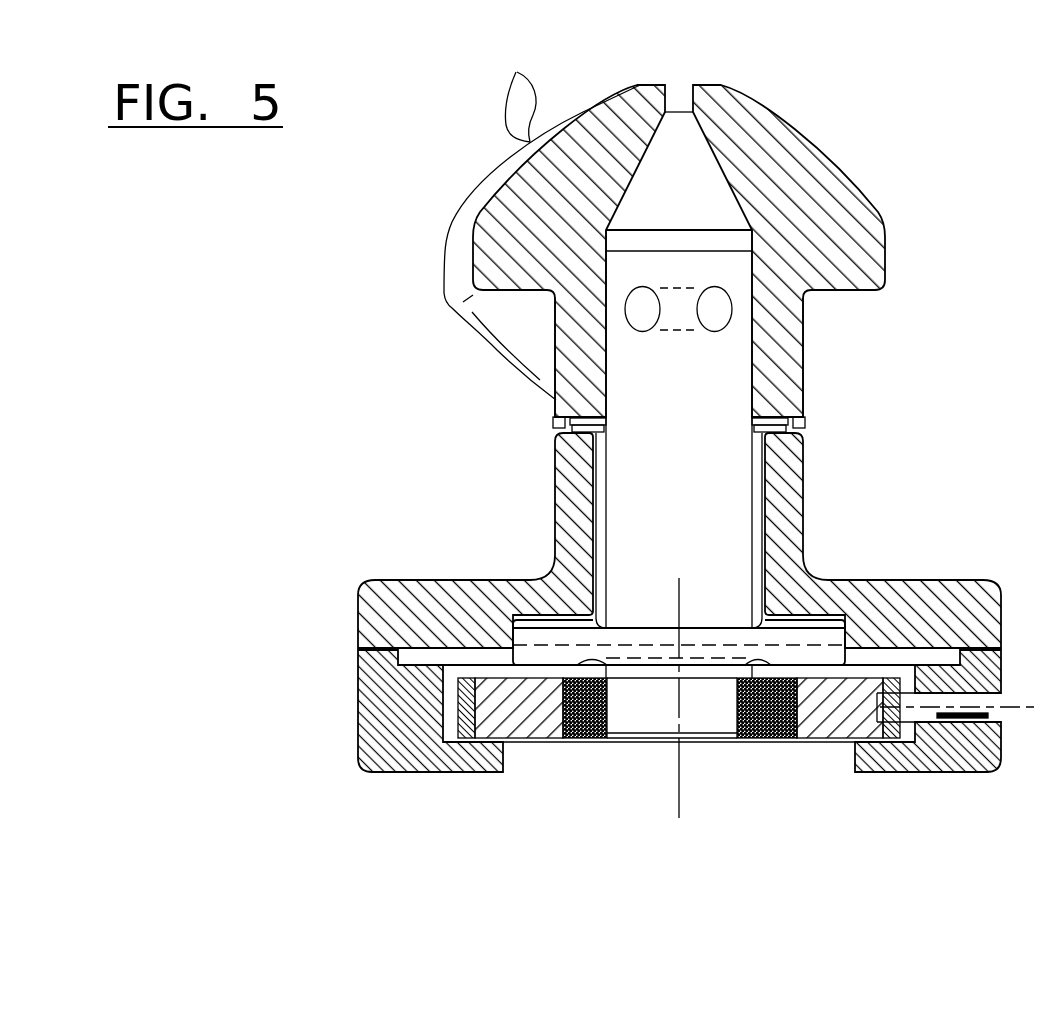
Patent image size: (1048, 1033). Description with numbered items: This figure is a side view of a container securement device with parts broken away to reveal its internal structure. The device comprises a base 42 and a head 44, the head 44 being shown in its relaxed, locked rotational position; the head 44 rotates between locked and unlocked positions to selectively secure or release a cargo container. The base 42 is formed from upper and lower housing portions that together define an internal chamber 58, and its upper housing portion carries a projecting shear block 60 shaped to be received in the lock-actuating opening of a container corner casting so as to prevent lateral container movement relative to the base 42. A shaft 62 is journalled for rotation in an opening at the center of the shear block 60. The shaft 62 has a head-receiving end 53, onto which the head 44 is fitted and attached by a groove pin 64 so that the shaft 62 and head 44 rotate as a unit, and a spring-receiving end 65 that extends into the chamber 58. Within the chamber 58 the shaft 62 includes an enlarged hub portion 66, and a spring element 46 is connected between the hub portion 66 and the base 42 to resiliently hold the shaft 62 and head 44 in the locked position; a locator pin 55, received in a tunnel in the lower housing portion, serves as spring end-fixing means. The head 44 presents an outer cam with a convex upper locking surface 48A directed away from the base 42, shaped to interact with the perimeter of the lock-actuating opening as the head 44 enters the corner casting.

The base 42 is at (537, 442).
The head 44 is at (770, 152).
The spring element 46 is at (445, 730).
The upper locking surface 48A is at (542, 214).
The head-receiving end 53 is at (640, 268).
The locator pin 55 is at (930, 739).
The internal chamber 58 is at (450, 693).
The shear block 60 is at (560, 522).
The shaft 62 is at (775, 343).
The groove pin 64 is at (742, 277).
The spring-receiving end 65 is at (640, 717).
The enlarged hub portion 66 is at (817, 640).